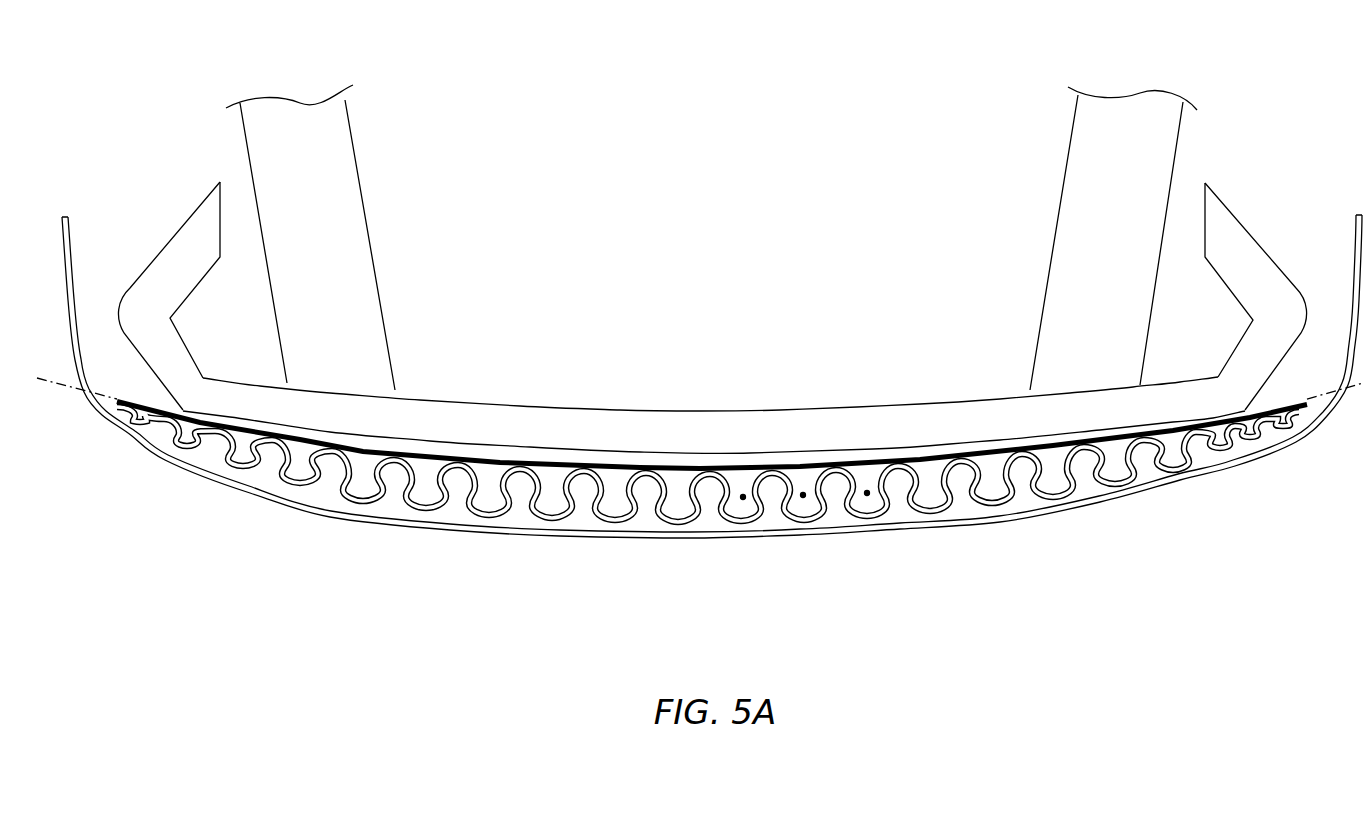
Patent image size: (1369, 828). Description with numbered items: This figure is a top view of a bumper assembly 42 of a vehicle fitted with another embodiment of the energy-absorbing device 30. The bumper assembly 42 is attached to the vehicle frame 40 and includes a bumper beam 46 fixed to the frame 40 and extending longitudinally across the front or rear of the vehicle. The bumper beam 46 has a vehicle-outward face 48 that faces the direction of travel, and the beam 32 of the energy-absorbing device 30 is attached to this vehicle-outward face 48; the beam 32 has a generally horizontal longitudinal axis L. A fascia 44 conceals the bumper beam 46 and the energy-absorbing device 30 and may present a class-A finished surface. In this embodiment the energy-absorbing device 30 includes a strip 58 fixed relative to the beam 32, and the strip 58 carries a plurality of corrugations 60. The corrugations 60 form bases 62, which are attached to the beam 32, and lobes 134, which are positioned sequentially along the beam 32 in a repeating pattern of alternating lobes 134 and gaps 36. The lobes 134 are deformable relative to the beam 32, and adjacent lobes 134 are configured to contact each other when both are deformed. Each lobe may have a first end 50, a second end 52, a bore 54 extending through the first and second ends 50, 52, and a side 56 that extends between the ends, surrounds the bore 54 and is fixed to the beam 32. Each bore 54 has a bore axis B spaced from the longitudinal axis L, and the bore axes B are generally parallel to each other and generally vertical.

The energy-absorbing device 30 is at (133, 393).
The beam 32 is at (458, 455).
The gaps 36 is at (522, 517).
The frame 40 is at (372, 237).
The bumper assembly 42 is at (210, 552).
The fascia 44 is at (902, 535).
The bumper beam 46 is at (857, 407).
The vehicle-outward face 48 is at (873, 452).
The first end 50 is at (163, 442).
The second end 52 is at (183, 453).
The bore 54 is at (742, 525).
The side 56 is at (748, 527).
The strip 58 is at (918, 453).
The corrugations 60 is at (1217, 443).
The bases 62 is at (647, 468).
The lobes 134 is at (493, 520).
The bore axis B is at (867, 490).
The longitudinal axis L is at (50, 385).